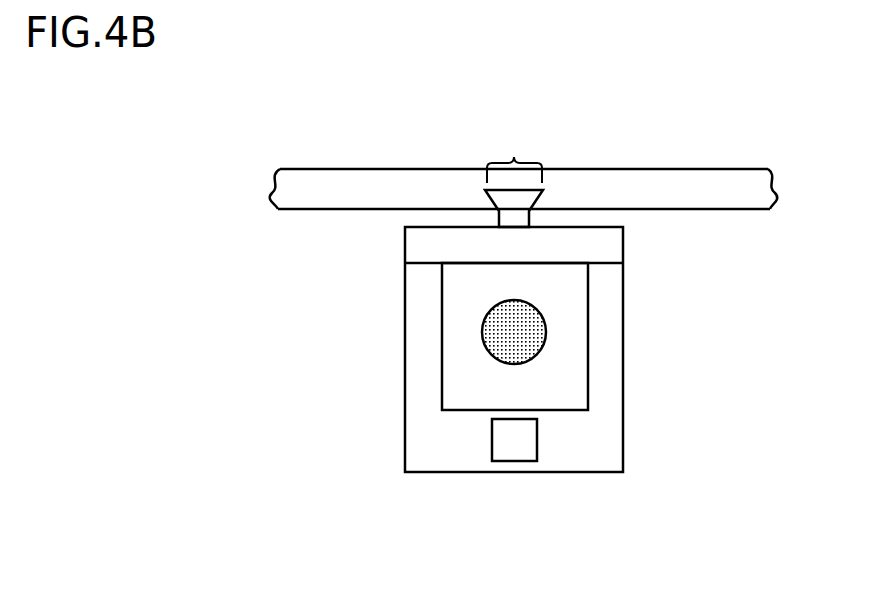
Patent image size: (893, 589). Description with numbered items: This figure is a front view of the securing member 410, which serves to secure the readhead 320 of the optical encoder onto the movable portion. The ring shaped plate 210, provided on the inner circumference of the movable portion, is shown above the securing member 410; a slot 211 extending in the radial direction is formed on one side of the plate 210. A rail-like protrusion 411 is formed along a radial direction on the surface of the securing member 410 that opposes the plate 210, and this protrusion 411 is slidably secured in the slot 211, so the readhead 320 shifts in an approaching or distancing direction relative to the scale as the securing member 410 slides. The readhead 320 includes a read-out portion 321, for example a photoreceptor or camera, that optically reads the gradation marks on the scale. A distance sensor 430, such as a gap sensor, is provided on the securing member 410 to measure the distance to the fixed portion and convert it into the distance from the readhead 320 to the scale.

The plate 210 is at (320, 169).
The slot 211 is at (514, 157).
The protrusion 411 is at (531, 218).
The securing member 410 is at (445, 472).
The readhead 320 is at (442, 333).
The read-out portion 321 is at (546, 323).
The distance sensor 430 is at (524, 461).